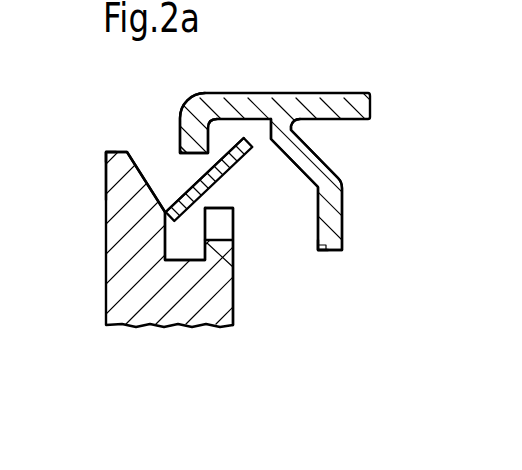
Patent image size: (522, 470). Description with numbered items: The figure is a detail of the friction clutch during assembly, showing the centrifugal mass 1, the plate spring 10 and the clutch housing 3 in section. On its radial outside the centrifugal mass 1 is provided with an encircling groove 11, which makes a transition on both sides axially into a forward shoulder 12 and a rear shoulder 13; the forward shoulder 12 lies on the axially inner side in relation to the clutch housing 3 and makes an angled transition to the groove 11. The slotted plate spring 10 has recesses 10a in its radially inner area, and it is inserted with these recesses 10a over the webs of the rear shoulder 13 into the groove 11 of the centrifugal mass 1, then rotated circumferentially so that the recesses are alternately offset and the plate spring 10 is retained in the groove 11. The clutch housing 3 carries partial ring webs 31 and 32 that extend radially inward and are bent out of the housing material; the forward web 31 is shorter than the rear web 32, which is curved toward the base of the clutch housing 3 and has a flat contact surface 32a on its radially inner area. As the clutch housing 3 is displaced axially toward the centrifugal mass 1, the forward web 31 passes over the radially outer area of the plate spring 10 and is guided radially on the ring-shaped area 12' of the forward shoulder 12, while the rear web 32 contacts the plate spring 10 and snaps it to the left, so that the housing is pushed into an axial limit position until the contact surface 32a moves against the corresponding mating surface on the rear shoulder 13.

The centrifugal mass 1 is at (150, 310).
The forward shoulder 12 is at (102, 182).
The ring-shaped area 12' is at (75, 137).
The plate spring 10 is at (218, 178).
The recesses 10a is at (177, 203).
The encircling groove 11 is at (190, 252).
The rear shoulder 13 is at (218, 250).
The clutch housing 3 is at (316, 86).
The forward web 31 is at (181, 116).
The rear web 32 is at (336, 224).
The contact surface 32a is at (318, 233).